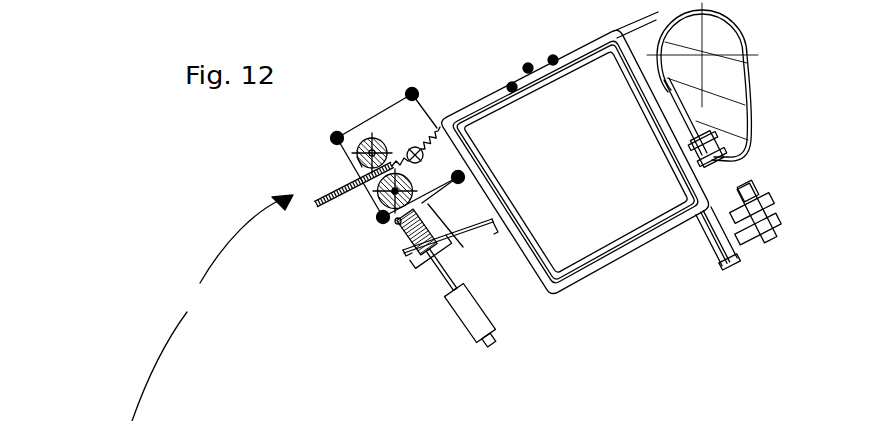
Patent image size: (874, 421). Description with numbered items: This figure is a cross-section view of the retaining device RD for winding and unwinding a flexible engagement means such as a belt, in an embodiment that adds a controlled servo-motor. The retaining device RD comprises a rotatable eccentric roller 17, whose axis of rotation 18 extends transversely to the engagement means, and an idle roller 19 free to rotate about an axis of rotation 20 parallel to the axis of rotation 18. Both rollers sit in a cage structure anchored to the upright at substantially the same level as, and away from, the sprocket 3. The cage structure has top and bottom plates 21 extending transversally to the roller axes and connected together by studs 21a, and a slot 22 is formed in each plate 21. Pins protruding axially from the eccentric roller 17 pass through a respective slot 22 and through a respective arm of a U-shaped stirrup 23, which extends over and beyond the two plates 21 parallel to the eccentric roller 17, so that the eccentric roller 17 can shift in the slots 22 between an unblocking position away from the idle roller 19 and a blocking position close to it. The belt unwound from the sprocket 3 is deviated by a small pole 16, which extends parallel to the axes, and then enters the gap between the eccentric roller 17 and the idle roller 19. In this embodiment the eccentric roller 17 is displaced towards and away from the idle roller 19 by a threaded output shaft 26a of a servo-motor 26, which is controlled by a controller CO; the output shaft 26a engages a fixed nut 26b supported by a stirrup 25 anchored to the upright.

The sprocket 3 is at (743, 28).
The small pole 16 is at (409, 152).
The eccentric roller 17 is at (395, 173).
The axis of rotation 18 is at (380, 205).
The idle roller 19 is at (356, 153).
The axis of rotation 20 is at (358, 151).
The plates 21 is at (398, 128).
The studs 21a is at (414, 89).
The slot 22 is at (398, 223).
The U-shaped stirrup 23 is at (460, 223).
The stirrup 25 is at (428, 205).
The servo-motor 26 is at (470, 303).
The threaded output shaft 26a is at (440, 268).
The fixed nut 26b is at (432, 259).
The retaining device RD is at (212, 308).
The controller CO is at (496, 341).